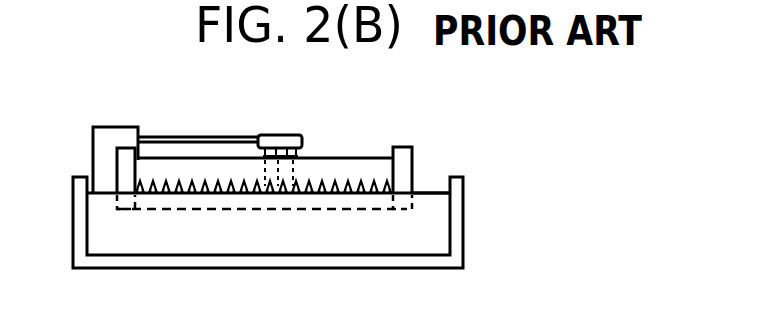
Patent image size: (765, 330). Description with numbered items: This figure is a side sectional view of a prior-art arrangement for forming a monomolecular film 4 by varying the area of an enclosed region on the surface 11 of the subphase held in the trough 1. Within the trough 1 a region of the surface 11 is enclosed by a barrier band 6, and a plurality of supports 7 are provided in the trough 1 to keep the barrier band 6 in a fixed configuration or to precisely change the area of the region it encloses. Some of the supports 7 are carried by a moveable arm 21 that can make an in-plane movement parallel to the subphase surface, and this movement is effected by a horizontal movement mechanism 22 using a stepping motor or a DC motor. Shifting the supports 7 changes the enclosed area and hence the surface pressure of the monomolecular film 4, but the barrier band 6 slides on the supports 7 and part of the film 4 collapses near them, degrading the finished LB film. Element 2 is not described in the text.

The trough 1 is at (463, 222).
The inner vessel 2 is at (410, 242).
The monomolecular film 4 is at (268, 182).
The barrier band 6 is at (167, 160).
The supports 7 is at (125, 149).
The surface of the subphase 11 is at (428, 193).
The moveable arm 21 is at (273, 134).
The horizontal movement mechanism 22 is at (93, 138).